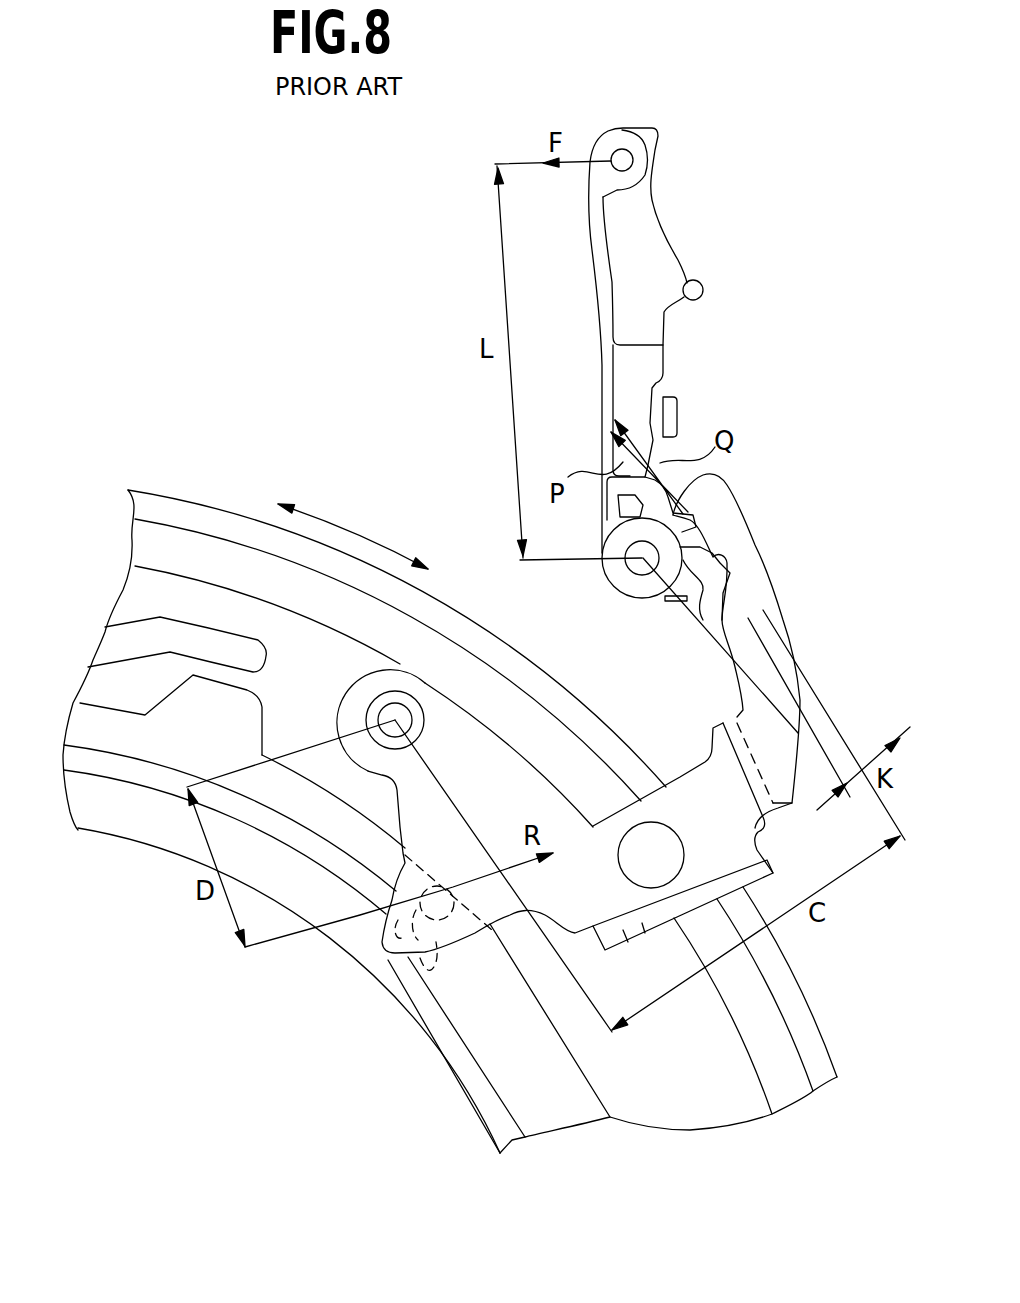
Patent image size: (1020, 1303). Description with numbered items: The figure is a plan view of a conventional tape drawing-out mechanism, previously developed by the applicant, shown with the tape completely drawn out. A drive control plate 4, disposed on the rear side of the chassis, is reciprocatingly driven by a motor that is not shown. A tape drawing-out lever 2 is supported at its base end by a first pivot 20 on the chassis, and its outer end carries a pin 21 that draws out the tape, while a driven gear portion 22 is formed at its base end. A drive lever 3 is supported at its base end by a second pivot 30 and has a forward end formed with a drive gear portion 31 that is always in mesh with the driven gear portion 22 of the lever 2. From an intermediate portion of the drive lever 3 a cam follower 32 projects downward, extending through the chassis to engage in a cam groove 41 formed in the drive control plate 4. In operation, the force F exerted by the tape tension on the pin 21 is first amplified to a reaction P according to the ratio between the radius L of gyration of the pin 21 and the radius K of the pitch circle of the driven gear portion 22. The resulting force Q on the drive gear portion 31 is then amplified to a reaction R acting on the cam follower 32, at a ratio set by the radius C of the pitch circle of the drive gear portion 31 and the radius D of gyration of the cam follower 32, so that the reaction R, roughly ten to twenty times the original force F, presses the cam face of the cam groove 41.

The tape drawing-out lever 2 is at (657, 246).
The drive lever 3 is at (762, 566).
The drive control plate 4 is at (212, 505).
The first pivot 20 is at (638, 585).
The pin 21 is at (622, 150).
The driven gear portion 22 is at (752, 562).
The second pivot 30 is at (392, 710).
The drive gear portion 31 is at (703, 603).
The cam follower 32 is at (420, 955).
The cam groove 41 is at (262, 742).